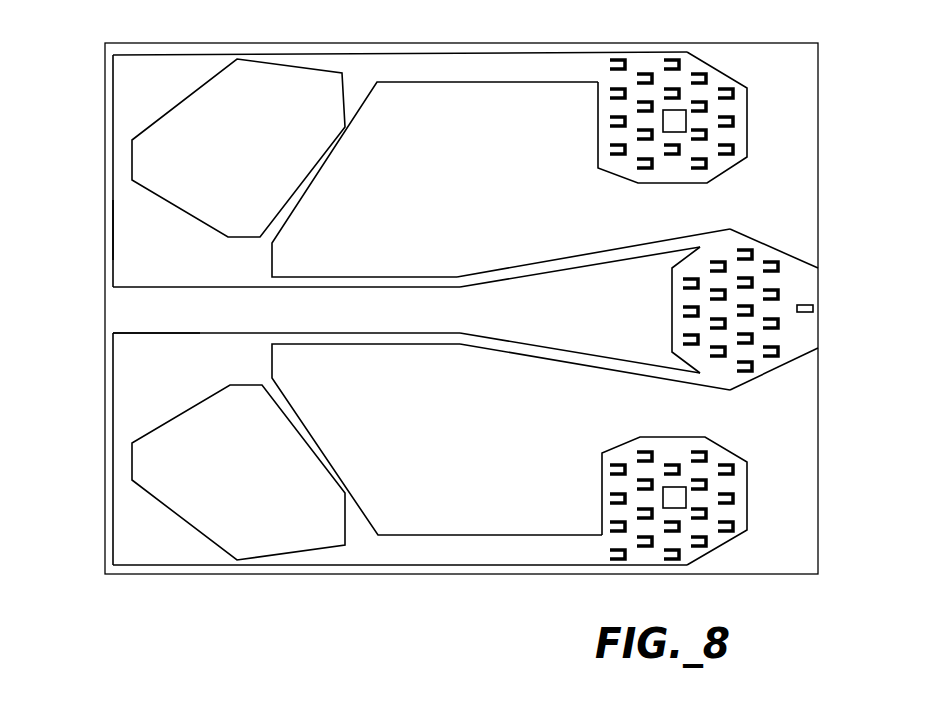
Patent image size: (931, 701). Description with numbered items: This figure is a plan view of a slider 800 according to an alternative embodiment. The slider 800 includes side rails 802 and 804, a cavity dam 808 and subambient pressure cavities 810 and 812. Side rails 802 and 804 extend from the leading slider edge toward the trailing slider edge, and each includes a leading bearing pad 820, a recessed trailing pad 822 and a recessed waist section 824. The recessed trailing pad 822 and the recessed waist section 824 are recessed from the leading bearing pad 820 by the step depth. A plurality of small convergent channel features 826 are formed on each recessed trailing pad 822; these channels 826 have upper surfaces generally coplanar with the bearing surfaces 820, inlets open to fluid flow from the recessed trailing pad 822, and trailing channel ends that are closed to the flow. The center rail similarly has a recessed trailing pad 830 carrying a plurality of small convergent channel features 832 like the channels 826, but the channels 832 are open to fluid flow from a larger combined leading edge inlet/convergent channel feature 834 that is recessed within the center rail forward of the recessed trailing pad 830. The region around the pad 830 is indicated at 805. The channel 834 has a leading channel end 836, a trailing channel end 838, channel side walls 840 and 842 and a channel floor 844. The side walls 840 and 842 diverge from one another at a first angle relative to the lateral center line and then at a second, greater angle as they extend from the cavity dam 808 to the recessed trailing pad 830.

The slider 800 is at (100, 72).
The side rail 802 is at (210, 50).
The side rail 804 is at (212, 570).
The connector pad region 805 is at (767, 230).
The cavity dam 808 is at (112, 225).
The subambient pressure cavity 810 is at (435, 179).
The subambient pressure cavity 812 is at (437, 439).
The leading bearing pad 820 is at (243, 103).
The recessed trailing pad 822 is at (635, 60).
The recessed waist section 824 is at (515, 62).
The convergent channel features 826 is at (700, 78).
The recessed trailing pad 830 is at (740, 377).
The convergent channel features 832 is at (772, 347).
The combined leading edge inlet/convergent channel feature 834 is at (447, 312).
The leading channel end 836 is at (143, 312).
The trailing channel end 838 is at (670, 300).
The channel side wall 840 is at (345, 283).
The channel side wall 842 is at (345, 342).
The channel floor 844 is at (485, 323).